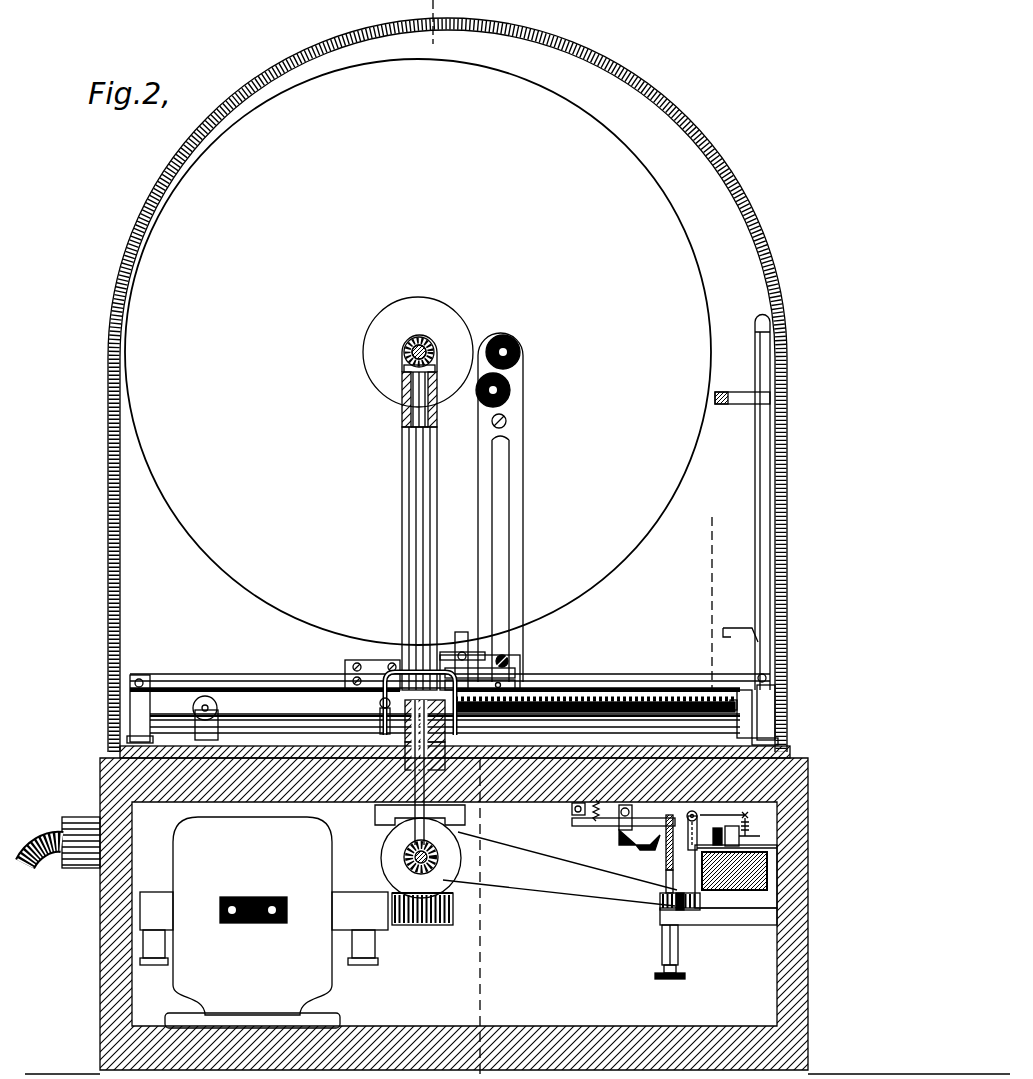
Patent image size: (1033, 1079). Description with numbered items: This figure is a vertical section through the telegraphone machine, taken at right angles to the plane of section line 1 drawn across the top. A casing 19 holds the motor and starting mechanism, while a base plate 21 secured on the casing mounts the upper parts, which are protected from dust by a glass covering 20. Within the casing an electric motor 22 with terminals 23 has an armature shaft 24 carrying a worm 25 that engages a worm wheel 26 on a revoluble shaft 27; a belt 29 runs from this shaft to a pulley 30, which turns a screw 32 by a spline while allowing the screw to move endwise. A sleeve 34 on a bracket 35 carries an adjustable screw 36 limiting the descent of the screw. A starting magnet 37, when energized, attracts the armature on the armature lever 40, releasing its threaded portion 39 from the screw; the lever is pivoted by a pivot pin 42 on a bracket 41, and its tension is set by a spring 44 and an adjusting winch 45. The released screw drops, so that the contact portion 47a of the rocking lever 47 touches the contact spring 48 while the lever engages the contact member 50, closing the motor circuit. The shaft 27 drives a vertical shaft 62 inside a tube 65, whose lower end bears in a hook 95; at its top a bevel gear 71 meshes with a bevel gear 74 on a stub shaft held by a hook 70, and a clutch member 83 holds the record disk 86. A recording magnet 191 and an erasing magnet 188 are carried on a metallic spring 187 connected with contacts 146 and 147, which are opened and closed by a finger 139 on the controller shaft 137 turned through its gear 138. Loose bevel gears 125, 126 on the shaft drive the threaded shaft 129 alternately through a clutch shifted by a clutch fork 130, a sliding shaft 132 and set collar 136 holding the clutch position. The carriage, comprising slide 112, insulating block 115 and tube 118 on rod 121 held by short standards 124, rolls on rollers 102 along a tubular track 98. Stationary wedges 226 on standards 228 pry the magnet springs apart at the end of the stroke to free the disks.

The section line 1 is at (458, 10).
The glass covering 20 is at (748, 206).
The record disk 86 is at (418, 352).
The clutch member 83 is at (406, 302).
The bevel gear 74 is at (418, 341).
The hook 70 is at (428, 350).
The bevel gear 71 is at (404, 370).
The vertical revoluble shaft 62 is at (402, 413).
The tube 65 is at (402, 470).
The metallic spring 187 is at (515, 449).
The recording magnet 191 is at (521, 350).
The erasing magnet 188 is at (511, 390).
The standard 228 is at (755, 467).
The stationary wedge 226 is at (735, 398).
The gear 138 is at (744, 630).
The rod 121 is at (170, 676).
The short standard 124 is at (134, 707).
The roller 102 is at (205, 695).
The tube 118 is at (268, 713).
The tubular track 98 is at (186, 716).
The sliding shaft 132 is at (597, 698).
The threaded shaft 129 is at (650, 698).
The insulating block 115 is at (346, 664).
The electrical contact 146 is at (508, 656).
The slide 112 is at (506, 670).
The electrical contact 147 is at (508, 688).
The controller shaft 137 is at (456, 642).
The finger 139 is at (462, 632).
The bevel gear 126 is at (393, 672).
The clutch fork 130 is at (380, 703).
The base plate 21 is at (122, 752).
The hook 95 is at (442, 772).
The casing 19 is at (100, 967).
The bevel gear 125 is at (63, 832).
The electric motor 22 is at (264, 922).
The terminal 23 is at (220, 913).
The armature shaft 24 is at (453, 911).
The worm 25 is at (420, 926).
The worm wheel 26 is at (381, 846).
The revoluble shaft 27 is at (404, 858).
The belt 29 is at (546, 862).
The pulley 30 is at (656, 905).
The screw 32 is at (688, 816).
The bracket 35 is at (728, 926).
The sleeve 34 is at (662, 945).
The adjustable screw 36 is at (657, 975).
The starting magnet 37 is at (738, 898).
The armature lever 40 is at (666, 856).
The threaded portion 39 is at (666, 884).
The rocking lever 47 is at (590, 827).
The contact portion 47a is at (640, 813).
The contact spring 48 is at (648, 849).
The contact member 50 is at (572, 812).
The pivot pin 42 is at (698, 815).
The bracket 41 is at (719, 832).
The spring 44 is at (746, 817).
The adjusting winch 45 is at (750, 836).
The set collar 136 is at (748, 690).